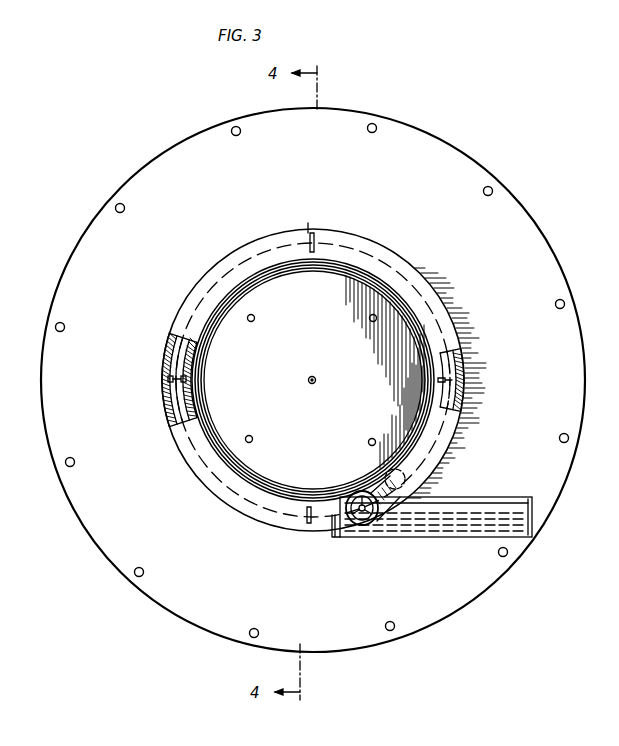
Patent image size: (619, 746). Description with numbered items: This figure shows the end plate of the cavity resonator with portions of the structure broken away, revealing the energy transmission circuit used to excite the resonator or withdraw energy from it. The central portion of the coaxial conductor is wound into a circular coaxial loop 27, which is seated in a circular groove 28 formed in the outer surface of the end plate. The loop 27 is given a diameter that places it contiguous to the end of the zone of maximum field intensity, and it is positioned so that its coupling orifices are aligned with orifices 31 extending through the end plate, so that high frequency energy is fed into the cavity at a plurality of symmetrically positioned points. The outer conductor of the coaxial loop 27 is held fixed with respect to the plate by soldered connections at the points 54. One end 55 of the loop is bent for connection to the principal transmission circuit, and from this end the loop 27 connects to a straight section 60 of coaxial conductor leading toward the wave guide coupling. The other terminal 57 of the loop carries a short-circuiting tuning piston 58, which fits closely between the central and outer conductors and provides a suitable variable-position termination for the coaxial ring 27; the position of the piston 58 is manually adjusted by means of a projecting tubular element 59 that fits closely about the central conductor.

The coaxial loop 27 is at (456, 416).
The circular groove 28 is at (452, 338).
The orifices 31 is at (168, 378).
The soldered connection points 54 is at (372, 312).
The bent end of the loop 55 is at (530, 498).
The other terminal of the loop 57 is at (381, 513).
The short-circuiting tuning piston 58 is at (420, 482).
The projecting tubular element 59 is at (364, 525).
The straight section of coaxial conductor 60 is at (505, 500).